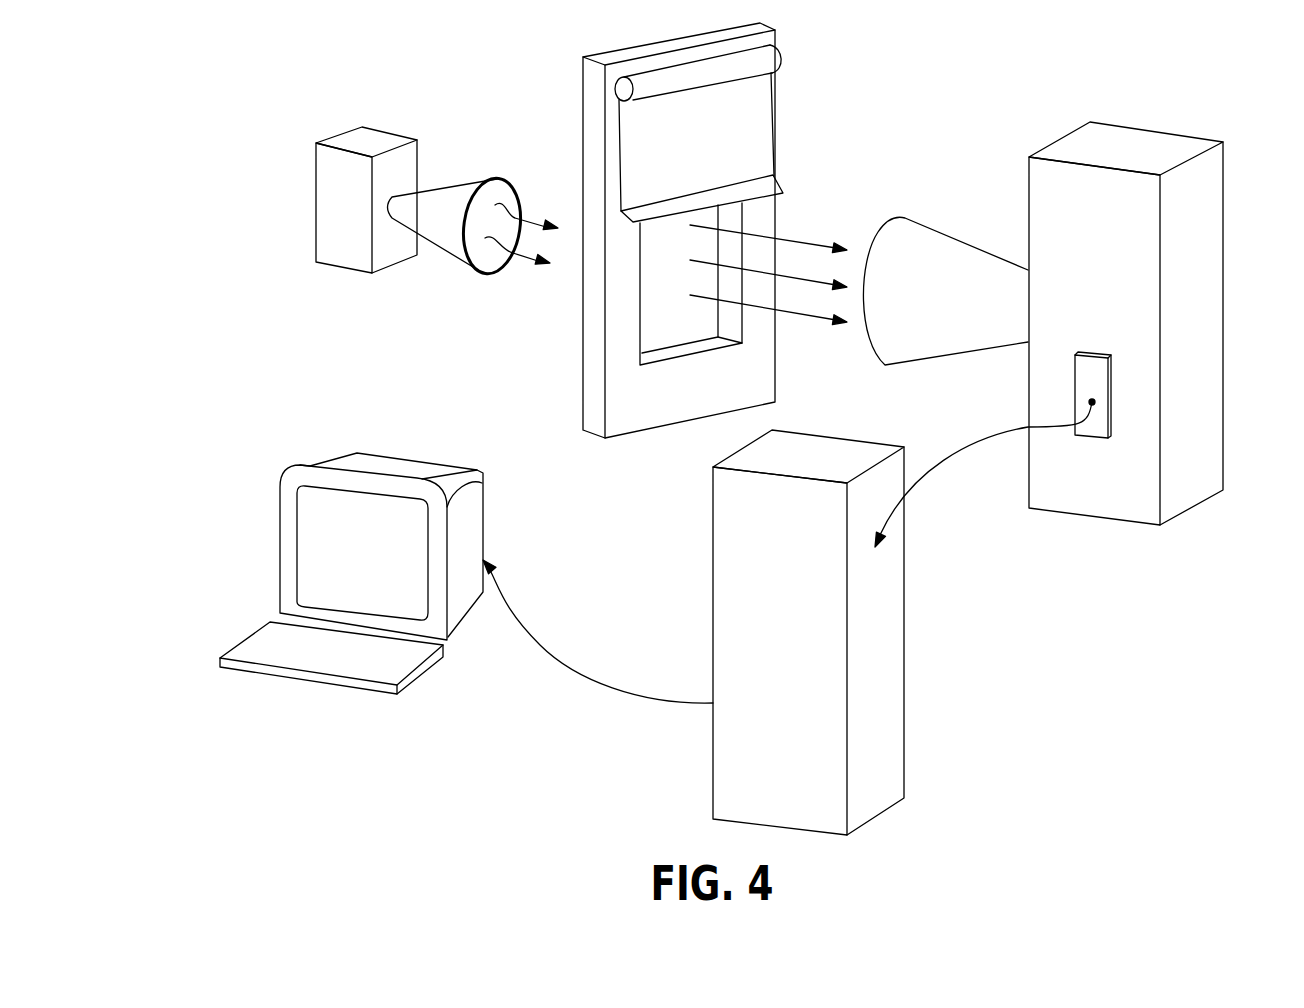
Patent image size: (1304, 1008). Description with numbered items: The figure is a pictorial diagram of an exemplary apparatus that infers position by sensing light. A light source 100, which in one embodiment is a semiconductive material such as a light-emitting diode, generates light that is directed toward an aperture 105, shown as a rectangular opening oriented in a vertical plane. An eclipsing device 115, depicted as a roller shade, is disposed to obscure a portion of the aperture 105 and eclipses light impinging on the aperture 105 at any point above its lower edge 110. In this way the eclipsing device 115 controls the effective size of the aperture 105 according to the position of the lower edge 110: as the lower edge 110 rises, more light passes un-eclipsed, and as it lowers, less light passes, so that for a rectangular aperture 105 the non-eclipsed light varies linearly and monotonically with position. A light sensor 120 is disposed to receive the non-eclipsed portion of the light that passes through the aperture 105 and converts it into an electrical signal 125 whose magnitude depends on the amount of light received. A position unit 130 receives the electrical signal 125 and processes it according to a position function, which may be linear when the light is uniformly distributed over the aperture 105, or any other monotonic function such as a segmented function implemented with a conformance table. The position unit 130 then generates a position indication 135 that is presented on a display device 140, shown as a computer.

The light source 100 is at (470, 178).
The aperture 105 is at (708, 323).
The lower edge 110 is at (775, 197).
The eclipsing device 115 is at (775, 110).
The light sensor 120 is at (1223, 218).
The electrical signal 125 is at (948, 452).
The position unit 130 is at (906, 640).
The position indication 135 is at (608, 688).
The display device 140 is at (280, 523).